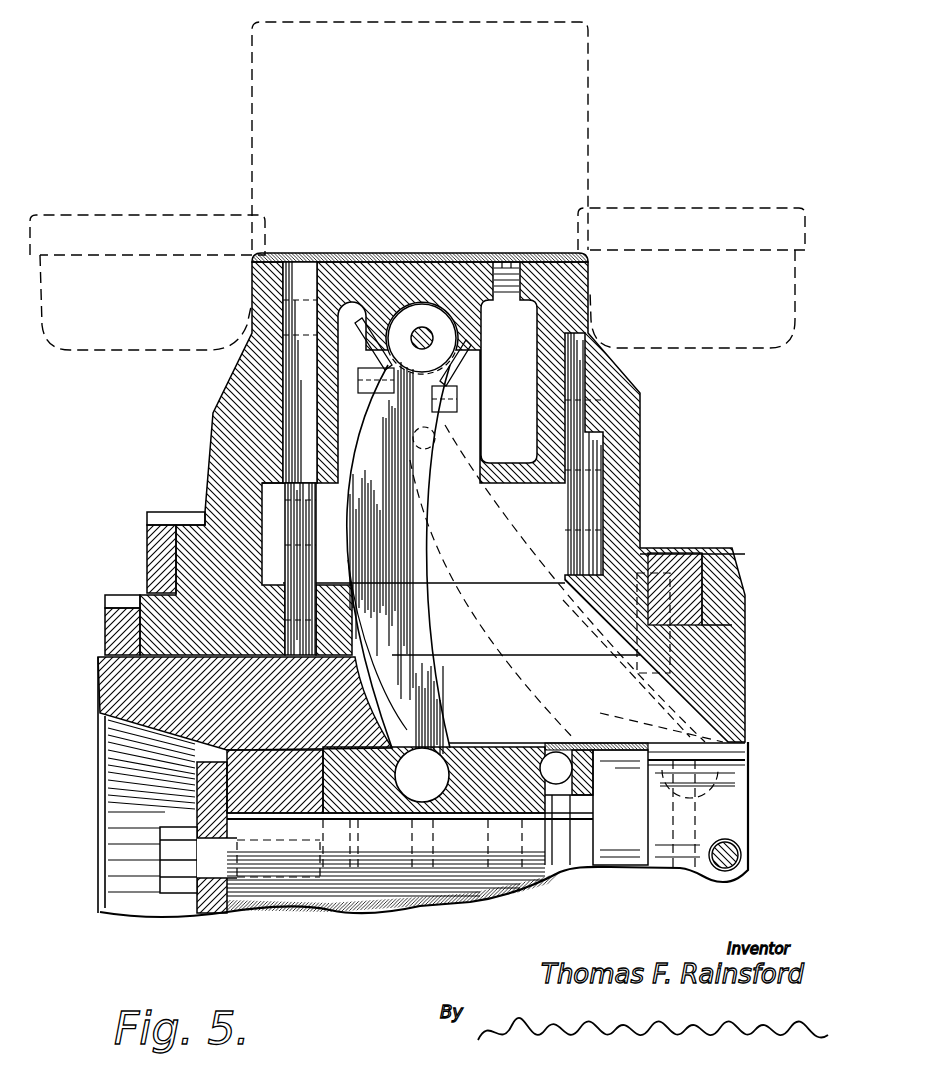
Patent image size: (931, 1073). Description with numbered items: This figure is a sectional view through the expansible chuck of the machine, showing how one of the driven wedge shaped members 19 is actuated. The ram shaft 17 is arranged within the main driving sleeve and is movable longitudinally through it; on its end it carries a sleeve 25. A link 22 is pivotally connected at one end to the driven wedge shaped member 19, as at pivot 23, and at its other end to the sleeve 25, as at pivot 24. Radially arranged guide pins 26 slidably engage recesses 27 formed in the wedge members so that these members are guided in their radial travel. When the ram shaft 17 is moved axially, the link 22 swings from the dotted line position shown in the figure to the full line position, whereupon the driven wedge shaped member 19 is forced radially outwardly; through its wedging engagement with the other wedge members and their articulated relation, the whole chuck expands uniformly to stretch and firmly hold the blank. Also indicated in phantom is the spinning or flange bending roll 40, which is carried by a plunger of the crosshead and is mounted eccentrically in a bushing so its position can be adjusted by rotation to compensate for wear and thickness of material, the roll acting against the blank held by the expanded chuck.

The ram shaft 17 is at (565, 101).
The spinning or flange bending roll 40 is at (108, 232).
The driven wedge shaped member 19 is at (478, 252).
The recess 27 is at (300, 276).
The guide pin 26 is at (284, 512).
The pivotal connection 23 is at (428, 344).
The link 22 is at (483, 531).
The pivotal connection 24 is at (436, 752).
The sleeve 25 is at (506, 748).